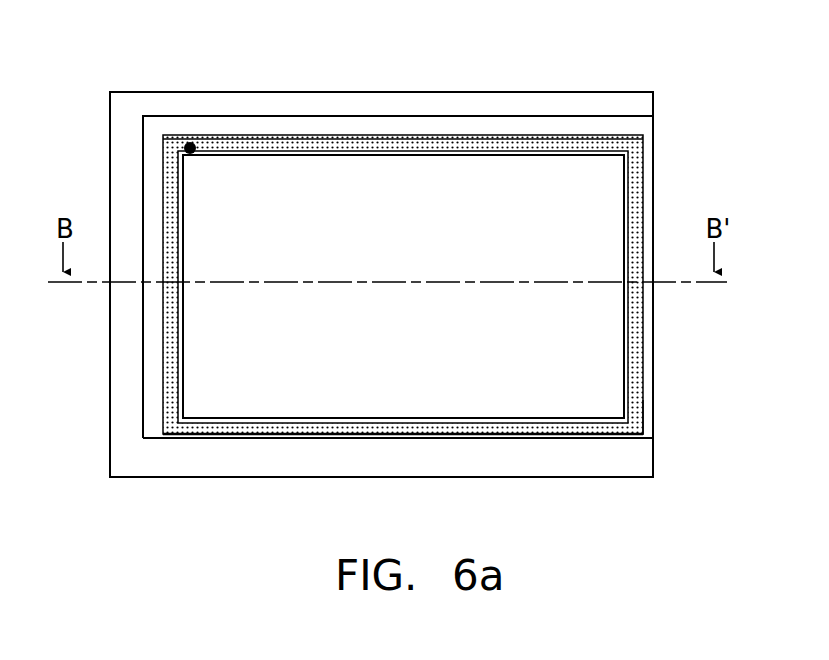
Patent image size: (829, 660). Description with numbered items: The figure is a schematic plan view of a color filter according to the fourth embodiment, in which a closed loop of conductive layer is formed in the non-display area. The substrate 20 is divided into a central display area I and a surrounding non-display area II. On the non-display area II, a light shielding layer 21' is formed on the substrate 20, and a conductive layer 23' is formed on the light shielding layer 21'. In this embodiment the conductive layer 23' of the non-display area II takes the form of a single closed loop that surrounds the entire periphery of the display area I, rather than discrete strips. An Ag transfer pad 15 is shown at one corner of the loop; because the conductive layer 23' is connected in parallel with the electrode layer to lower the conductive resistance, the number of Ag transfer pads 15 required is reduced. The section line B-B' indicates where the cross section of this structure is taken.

The Ag transfer pad 15 is at (190, 142).
The substrate 20 is at (152, 432).
The light shielding layer 21' is at (398, 324).
The conductive layer 23' is at (403, 334).
The display area I is at (409, 256).
The non-display area II is at (589, 446).